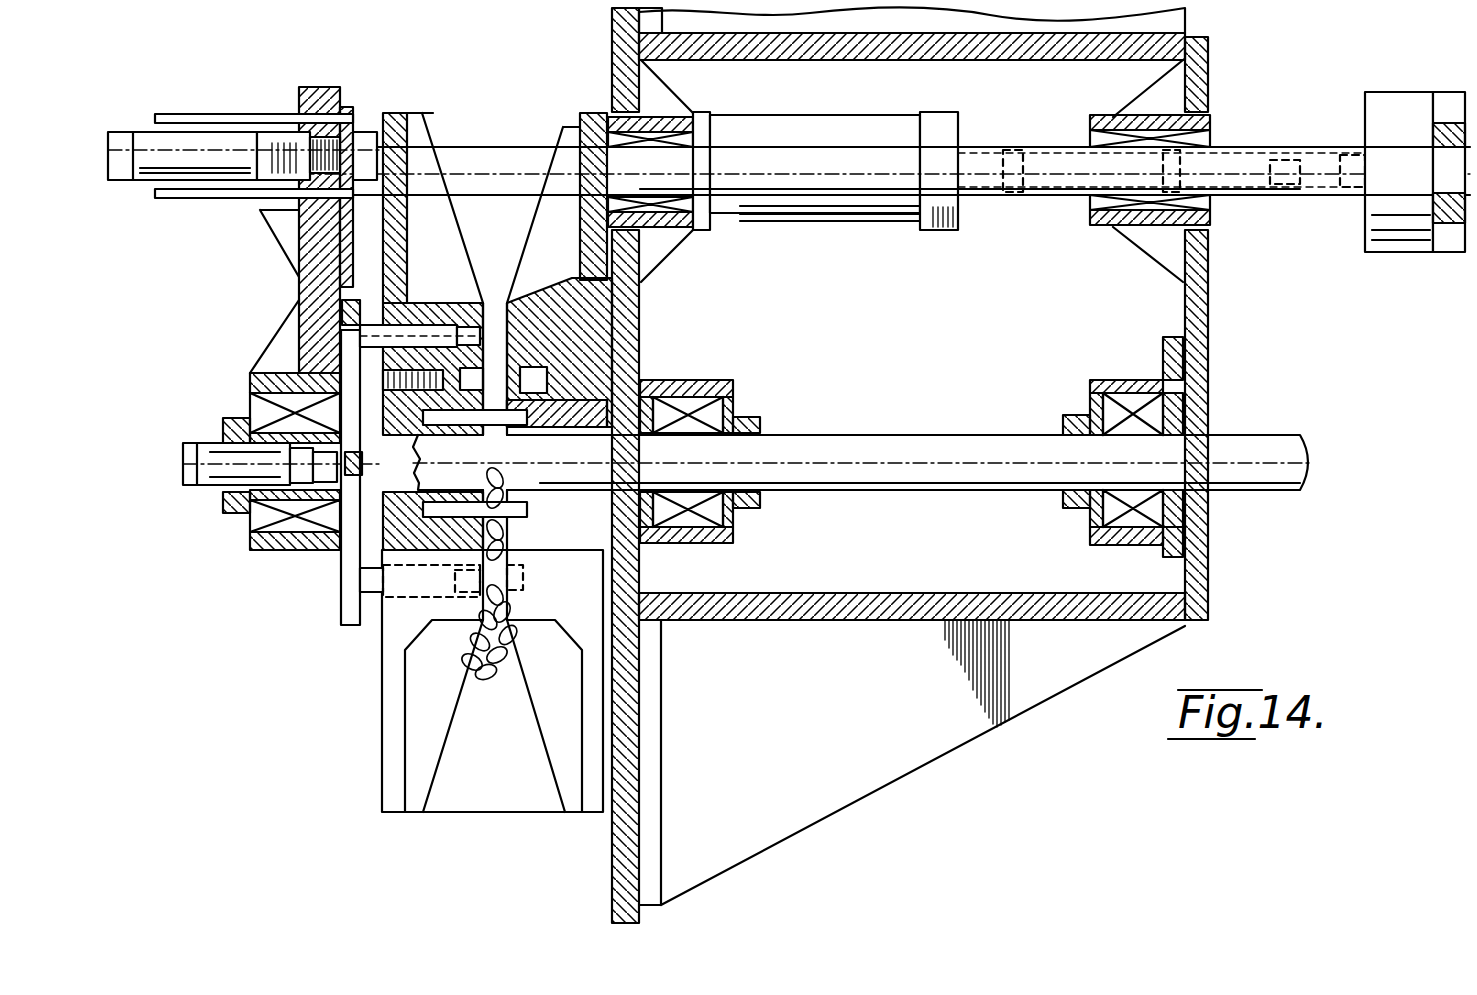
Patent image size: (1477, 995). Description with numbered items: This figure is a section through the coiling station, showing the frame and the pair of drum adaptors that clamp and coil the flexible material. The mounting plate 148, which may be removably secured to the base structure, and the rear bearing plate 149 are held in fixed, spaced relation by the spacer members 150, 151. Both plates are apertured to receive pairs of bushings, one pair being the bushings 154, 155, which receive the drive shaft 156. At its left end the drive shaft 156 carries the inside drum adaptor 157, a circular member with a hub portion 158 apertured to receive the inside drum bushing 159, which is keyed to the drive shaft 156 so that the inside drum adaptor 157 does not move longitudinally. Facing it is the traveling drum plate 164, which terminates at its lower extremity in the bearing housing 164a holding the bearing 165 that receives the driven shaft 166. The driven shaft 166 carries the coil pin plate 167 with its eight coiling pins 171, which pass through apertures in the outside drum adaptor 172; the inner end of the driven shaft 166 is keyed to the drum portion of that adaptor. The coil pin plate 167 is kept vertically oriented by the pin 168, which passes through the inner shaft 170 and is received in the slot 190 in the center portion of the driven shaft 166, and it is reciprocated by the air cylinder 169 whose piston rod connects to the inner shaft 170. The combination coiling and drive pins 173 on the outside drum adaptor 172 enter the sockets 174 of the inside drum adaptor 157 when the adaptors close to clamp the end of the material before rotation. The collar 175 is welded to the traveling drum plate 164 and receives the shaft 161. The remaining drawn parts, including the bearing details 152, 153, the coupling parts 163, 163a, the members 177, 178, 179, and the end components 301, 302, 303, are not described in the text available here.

The mounting plate 148 is at (861, 465).
The rear bearing plate 149 is at (1238, 328).
The spacer member 150 is at (912, 58).
The spacer member 151 is at (912, 629).
The bearing 152 is at (1146, 171).
The bearing 153 is at (679, 171).
The bushing 154 is at (724, 443).
The bushing 155 is at (1123, 446).
The drive shaft 156 is at (863, 487).
The inside drum adaptor 157 is at (577, 174).
The hub portion 158 is at (607, 352).
The inside drum bushing 159 is at (614, 382).
The shaft 161 is at (825, 190).
The coupling body 163 is at (1378, 190).
The coupling pin 163a is at (1327, 199).
The traveling drum plate 164 is at (277, 230).
The bearing housing 164a is at (268, 483).
The bearing 165 is at (261, 481).
The driven shaft 166 is at (247, 477).
The coil pin plate 167 is at (297, 300).
The pin 168 is at (326, 477).
The air cylinder 169 is at (252, 472).
The inner shaft 170 is at (314, 522).
The coiling pins 171 is at (420, 428).
The outside drum adaptor 172 is at (492, 441).
The combination coiling and drive pins 173 is at (548, 585).
The sockets 174 is at (506, 500).
The collar 175 is at (245, 124).
The plate 177 is at (371, 175).
The bar 178 is at (254, 97).
The bar 179 is at (254, 215).
The slot 190 is at (437, 462).
The end cap 301 is at (1433, 195).
The drive shaft 302 is at (885, 149).
The sleeve lines 303 is at (830, 240).